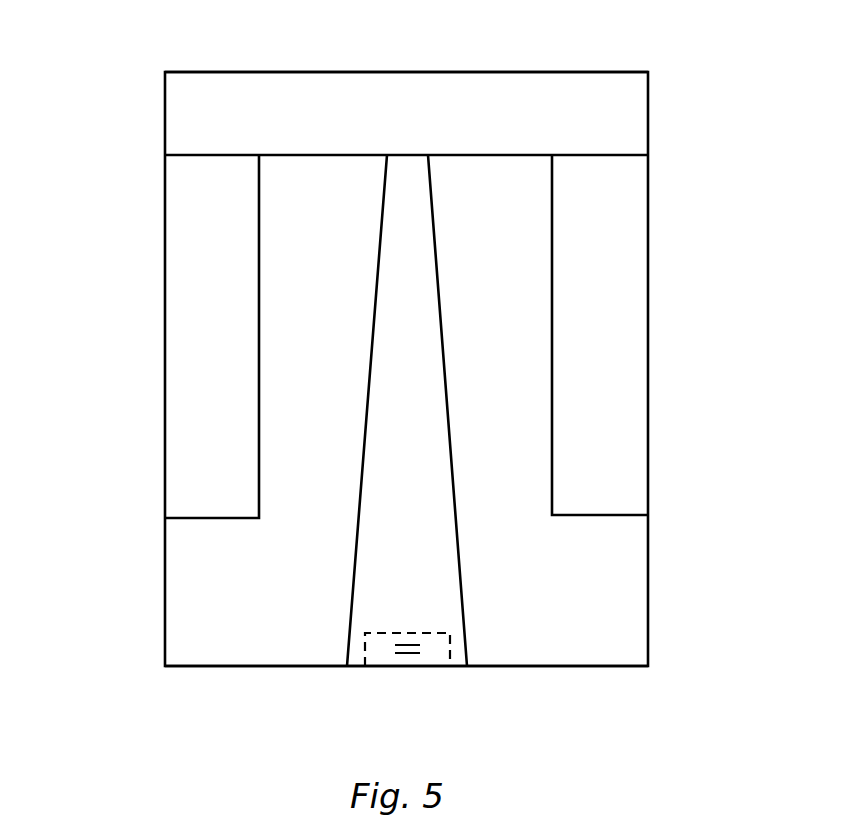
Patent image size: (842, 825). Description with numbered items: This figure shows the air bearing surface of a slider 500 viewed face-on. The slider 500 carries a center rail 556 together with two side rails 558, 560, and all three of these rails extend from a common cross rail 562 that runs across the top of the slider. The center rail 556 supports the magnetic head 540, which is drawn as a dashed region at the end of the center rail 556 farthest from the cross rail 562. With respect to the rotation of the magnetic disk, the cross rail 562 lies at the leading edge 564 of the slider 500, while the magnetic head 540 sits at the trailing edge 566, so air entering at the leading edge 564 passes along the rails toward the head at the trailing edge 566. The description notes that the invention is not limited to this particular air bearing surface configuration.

The slider 500 is at (165, 613).
The magnetic head 540 is at (387, 666).
The center rail 556 is at (387, 276).
The side rail 558 is at (182, 240).
The side rail 560 is at (630, 240).
The cross rail 562 is at (318, 85).
The leading edge 564 is at (516, 72).
The trailing edge 566 is at (538, 666).